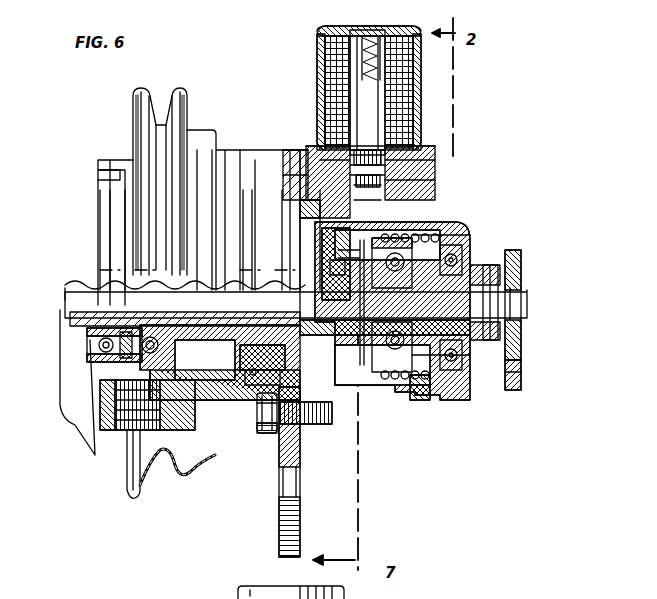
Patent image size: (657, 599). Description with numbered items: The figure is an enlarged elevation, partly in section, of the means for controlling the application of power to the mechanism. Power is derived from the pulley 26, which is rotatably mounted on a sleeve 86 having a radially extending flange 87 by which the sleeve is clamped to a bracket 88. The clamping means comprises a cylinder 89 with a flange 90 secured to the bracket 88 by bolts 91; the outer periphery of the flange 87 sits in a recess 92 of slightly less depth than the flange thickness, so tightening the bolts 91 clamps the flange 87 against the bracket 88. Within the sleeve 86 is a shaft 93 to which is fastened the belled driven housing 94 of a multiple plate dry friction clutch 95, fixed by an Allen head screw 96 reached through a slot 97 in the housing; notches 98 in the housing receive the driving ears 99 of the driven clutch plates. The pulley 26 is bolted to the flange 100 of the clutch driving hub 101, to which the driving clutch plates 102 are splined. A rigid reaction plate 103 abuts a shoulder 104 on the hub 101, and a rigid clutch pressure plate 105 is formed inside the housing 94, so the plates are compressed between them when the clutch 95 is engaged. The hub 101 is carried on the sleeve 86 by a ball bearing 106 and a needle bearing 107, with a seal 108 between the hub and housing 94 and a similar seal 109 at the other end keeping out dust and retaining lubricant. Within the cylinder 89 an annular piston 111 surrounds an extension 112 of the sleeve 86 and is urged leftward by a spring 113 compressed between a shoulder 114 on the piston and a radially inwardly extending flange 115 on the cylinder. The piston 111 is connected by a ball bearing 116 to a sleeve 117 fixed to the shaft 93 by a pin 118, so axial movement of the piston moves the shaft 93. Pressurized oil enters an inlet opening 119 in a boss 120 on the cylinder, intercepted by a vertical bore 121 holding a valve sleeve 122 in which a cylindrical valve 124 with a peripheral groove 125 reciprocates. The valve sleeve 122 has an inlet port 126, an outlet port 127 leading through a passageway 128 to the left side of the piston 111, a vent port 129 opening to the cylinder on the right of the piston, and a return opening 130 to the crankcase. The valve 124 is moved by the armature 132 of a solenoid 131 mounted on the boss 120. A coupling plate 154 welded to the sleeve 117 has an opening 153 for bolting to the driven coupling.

The pulley 26 is at (135, 100).
The sleeve 86 is at (260, 318).
The radially extending flange 87 is at (340, 385).
The bracket 88 is at (283, 512).
The cylinder 89 is at (400, 410).
The flange 90 is at (315, 425).
The bolts 91 is at (265, 433).
The recess 92 is at (332, 425).
The shaft 93 is at (95, 285).
The belled driven housing 94 is at (110, 428).
The multiple plate dry friction clutch 95 is at (125, 440).
The screw 96 is at (75, 297).
The slot 97 is at (88, 377).
The notches 98 is at (118, 178).
The driving ears 99 is at (120, 212).
The flange 100 is at (262, 388).
The clutch driving hub 101 is at (208, 345).
The driving clutch plates 102 is at (118, 385).
The reaction plate 103 is at (228, 440).
The shoulder 104 is at (225, 435).
The clutch pressure plate 105 is at (122, 400).
The ball bearing 106 is at (178, 325).
The needle bearing 107 is at (240, 318).
The seal 108 is at (98, 345).
The seal 109 is at (235, 365).
The annular piston 111 is at (338, 265).
The extension 112 is at (360, 325).
The spring 113 is at (440, 215).
The shoulder 114 is at (436, 205).
The radially inwardly extending flange 115 is at (470, 222).
The ball bearing 116 is at (385, 318).
The sleeve 117 is at (432, 318).
The pin 118 is at (490, 265).
The inlet opening 119 is at (432, 170).
The boss 120 is at (437, 160).
The vertical bore 121 is at (413, 130).
The valve sleeve 122 is at (308, 150).
The cylindrical valve 124 is at (300, 175).
The peripheral groove 125 is at (302, 208).
The inlet port 126 is at (432, 178).
The outlet port 127 is at (352, 185).
The passageway 128 is at (315, 222).
The vent port 129 is at (432, 186).
The return opening 130 is at (430, 410).
The solenoid 131 is at (406, 77).
The armature 132 is at (360, 82).
The opening 153 is at (522, 378).
The coupling plate 154 is at (520, 345).